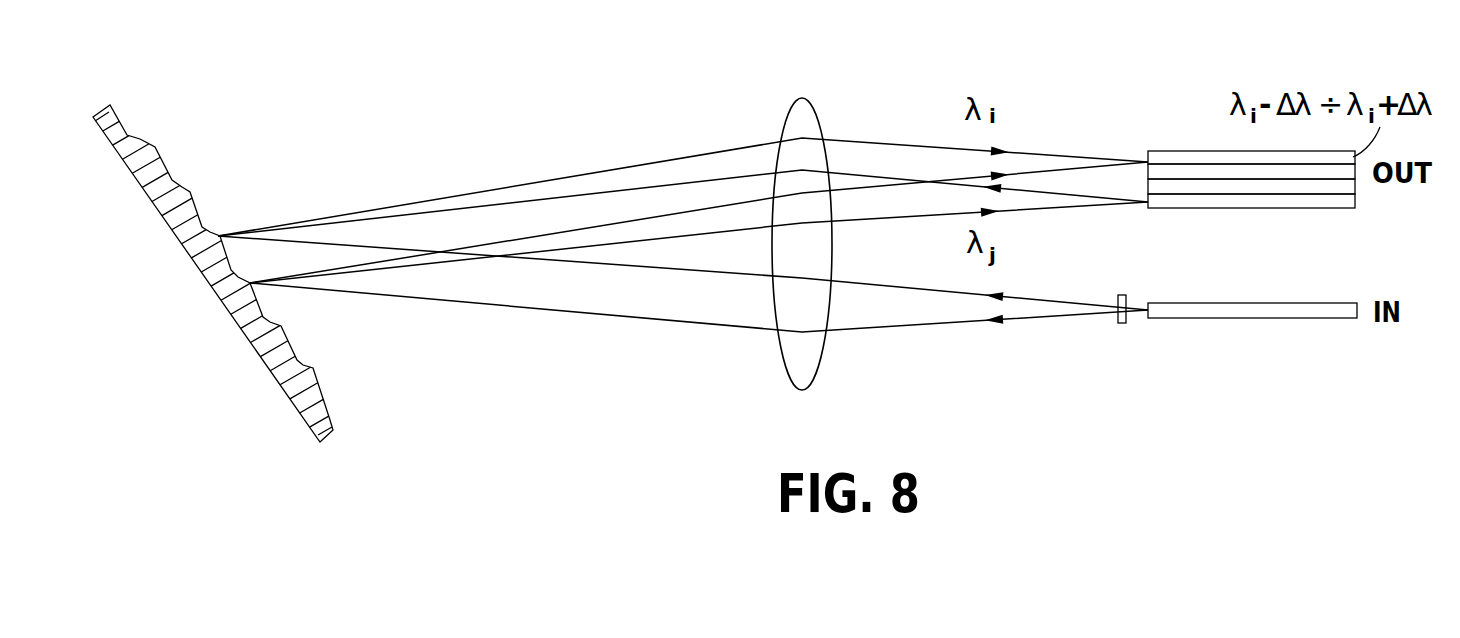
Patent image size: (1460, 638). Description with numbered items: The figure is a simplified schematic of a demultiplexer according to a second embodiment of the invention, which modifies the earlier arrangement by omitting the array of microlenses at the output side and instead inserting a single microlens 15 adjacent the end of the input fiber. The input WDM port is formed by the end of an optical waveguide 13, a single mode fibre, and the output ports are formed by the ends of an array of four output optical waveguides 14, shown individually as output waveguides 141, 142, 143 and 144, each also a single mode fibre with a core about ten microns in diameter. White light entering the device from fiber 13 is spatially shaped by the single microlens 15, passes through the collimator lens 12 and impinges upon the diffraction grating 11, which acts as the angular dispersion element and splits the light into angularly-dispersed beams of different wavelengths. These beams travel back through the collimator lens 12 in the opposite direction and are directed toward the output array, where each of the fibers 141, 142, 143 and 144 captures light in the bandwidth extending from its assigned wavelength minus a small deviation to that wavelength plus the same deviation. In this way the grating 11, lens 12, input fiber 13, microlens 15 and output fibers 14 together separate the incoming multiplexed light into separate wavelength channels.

The diffraction grating 11 is at (142, 141).
The collimator lens 12 is at (803, 112).
The optical waveguide 13 is at (1270, 318).
The output optical waveguides 14 is at (1236, 161).
The first output optical waveguide 141 is at (1160, 157).
The second output optical waveguide 142 is at (1193, 170).
The third output optical waveguide 143 is at (1175, 187).
The fourth output optical waveguide 144 is at (1310, 208).
The microlens 15 is at (1122, 323).